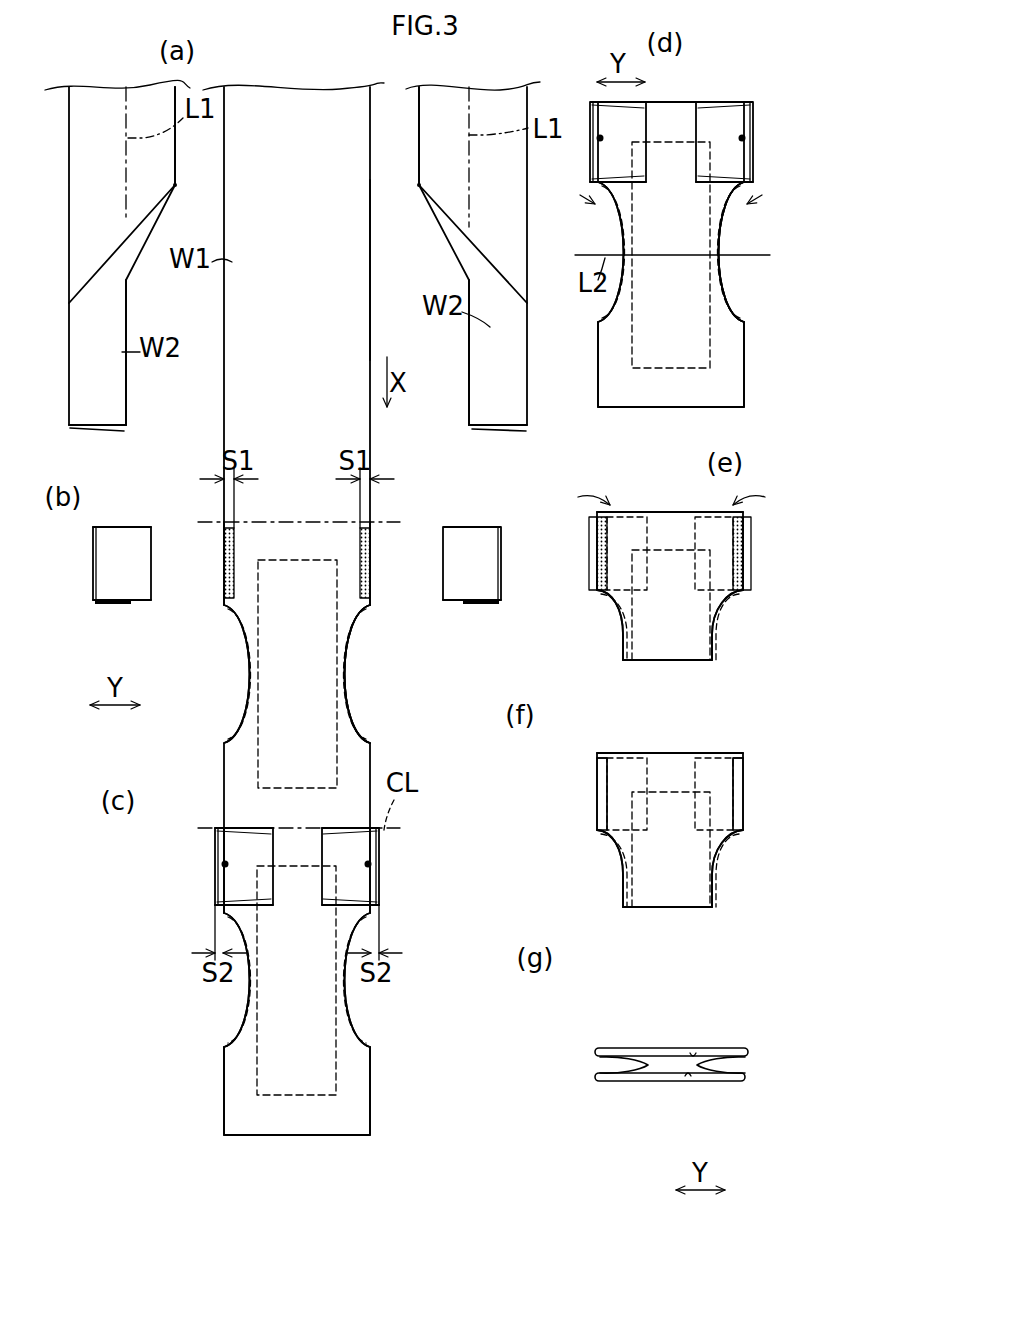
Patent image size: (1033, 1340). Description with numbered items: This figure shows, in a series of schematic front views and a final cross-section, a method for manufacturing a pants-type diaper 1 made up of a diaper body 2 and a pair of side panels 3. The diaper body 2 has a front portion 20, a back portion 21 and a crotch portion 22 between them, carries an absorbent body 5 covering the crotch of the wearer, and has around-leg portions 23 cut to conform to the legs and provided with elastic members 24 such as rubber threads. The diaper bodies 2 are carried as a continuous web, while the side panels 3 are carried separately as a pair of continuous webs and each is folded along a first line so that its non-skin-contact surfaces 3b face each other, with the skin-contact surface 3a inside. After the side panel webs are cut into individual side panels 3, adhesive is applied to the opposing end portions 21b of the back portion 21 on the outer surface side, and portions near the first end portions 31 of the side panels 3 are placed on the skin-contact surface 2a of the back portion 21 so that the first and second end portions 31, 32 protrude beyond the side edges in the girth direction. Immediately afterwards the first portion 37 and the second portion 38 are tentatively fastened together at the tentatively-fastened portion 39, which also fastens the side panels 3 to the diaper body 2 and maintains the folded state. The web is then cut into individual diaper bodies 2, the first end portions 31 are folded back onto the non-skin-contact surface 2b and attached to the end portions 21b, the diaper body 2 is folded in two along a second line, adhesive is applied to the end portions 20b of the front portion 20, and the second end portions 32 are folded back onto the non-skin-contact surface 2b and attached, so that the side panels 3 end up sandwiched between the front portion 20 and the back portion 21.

The pants-type diaper 1 is at (598, 612).
The diaper body 2 is at (302, 545).
The skin-contact surface 2a is at (360, 278).
The non-skin-contact surface 2b is at (345, 615).
The side panel 3 is at (100, 558).
The skin-contact surface of side panel 3a is at (120, 384).
The non-skin-contact surface of side panel 3b is at (170, 150).
The absorbent body 5 is at (300, 650).
The front portion 20 is at (290, 810).
The end portion of front portion 20b is at (600, 566).
The back portion 21 is at (285, 545).
The end portion of back portion 21b is at (224, 562).
The crotch portion 22 is at (310, 682).
The around-leg portion 23 is at (246, 690).
The elastic member 24 is at (248, 722).
The first end portion 31 is at (80, 432).
The second end portion 32 is at (74, 430).
The first portion 37 is at (85, 155).
The second portion 38 is at (172, 172).
The tentatively-fastened portion 39 is at (222, 864).